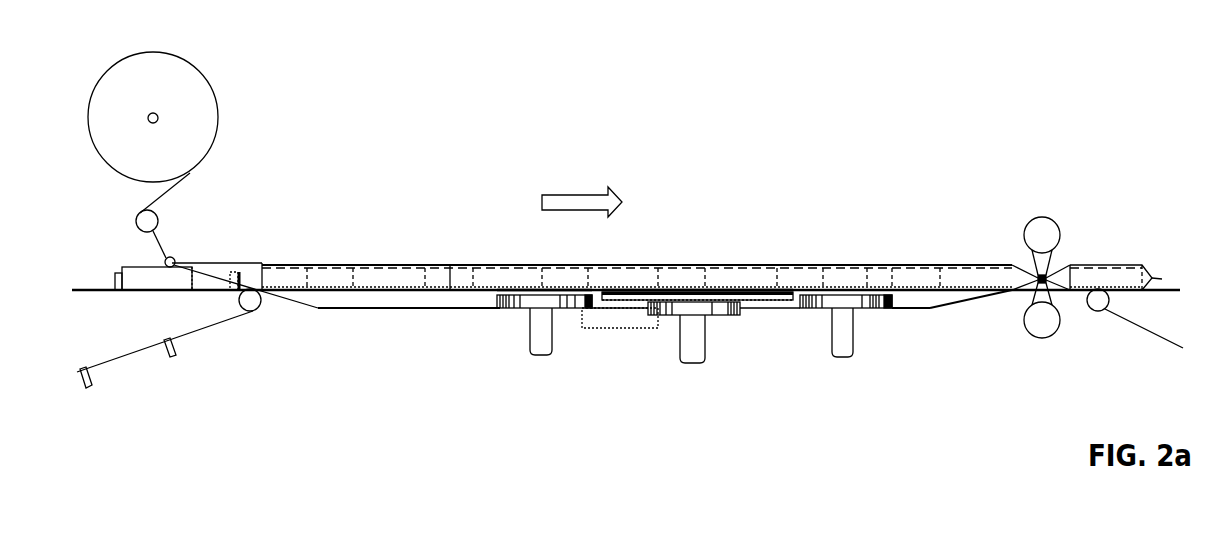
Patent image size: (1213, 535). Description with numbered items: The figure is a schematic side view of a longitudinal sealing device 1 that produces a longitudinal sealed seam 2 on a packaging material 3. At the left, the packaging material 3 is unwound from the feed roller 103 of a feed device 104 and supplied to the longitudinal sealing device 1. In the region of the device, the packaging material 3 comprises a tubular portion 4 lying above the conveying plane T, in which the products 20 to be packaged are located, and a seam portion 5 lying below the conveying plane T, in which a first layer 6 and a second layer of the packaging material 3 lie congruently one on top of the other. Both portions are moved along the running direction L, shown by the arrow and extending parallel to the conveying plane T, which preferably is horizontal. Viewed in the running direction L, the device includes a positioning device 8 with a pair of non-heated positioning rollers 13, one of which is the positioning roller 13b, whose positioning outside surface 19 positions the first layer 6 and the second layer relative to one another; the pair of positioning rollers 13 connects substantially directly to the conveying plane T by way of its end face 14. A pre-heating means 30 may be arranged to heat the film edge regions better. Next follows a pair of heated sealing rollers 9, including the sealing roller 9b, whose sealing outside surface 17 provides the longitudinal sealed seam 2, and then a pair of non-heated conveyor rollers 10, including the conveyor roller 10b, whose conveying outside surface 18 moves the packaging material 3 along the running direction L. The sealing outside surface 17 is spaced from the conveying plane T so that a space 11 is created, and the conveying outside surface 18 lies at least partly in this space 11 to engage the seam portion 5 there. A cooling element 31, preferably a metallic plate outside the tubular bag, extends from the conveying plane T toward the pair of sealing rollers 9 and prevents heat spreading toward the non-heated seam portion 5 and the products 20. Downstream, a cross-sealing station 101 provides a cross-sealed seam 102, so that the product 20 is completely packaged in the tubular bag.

The longitudinal sealing device 1 is at (328, 168).
The longitudinal sealed seam 2 is at (762, 300).
The packaging material 3 is at (922, 272).
The tubular portion 4 is at (797, 275).
The seam portion 5 is at (930, 300).
The first layer 6 is at (368, 300).
The positioning device 8 is at (513, 308).
The pair of heated sealing rollers 9 is at (682, 308).
The sealing roller 9b is at (695, 307).
The pair of non-heated conveyor rollers 10 is at (837, 308).
The conveyor roller 10b is at (858, 312).
The space 11 is at (680, 295).
The pair of non-heated positioning rollers 13 is at (540, 308).
The positioning roller 13b is at (527, 308).
The end face 14 is at (518, 295).
The sealing outside surface 17 is at (718, 308).
The conveying outside surface 18 is at (873, 308).
The positioning outside surface 19 is at (563, 308).
The products 20 is at (388, 275).
The pre-heating means 30 is at (620, 310).
The cooling element 31 is at (767, 293).
The conveying plane T is at (450, 265).
The running direction L is at (570, 203).
The cross-sealing station 101 is at (1042, 237).
The cross-sealed seam 102 is at (1047, 278).
The feed roller 103 is at (200, 70).
The feed device 104 is at (92, 97).